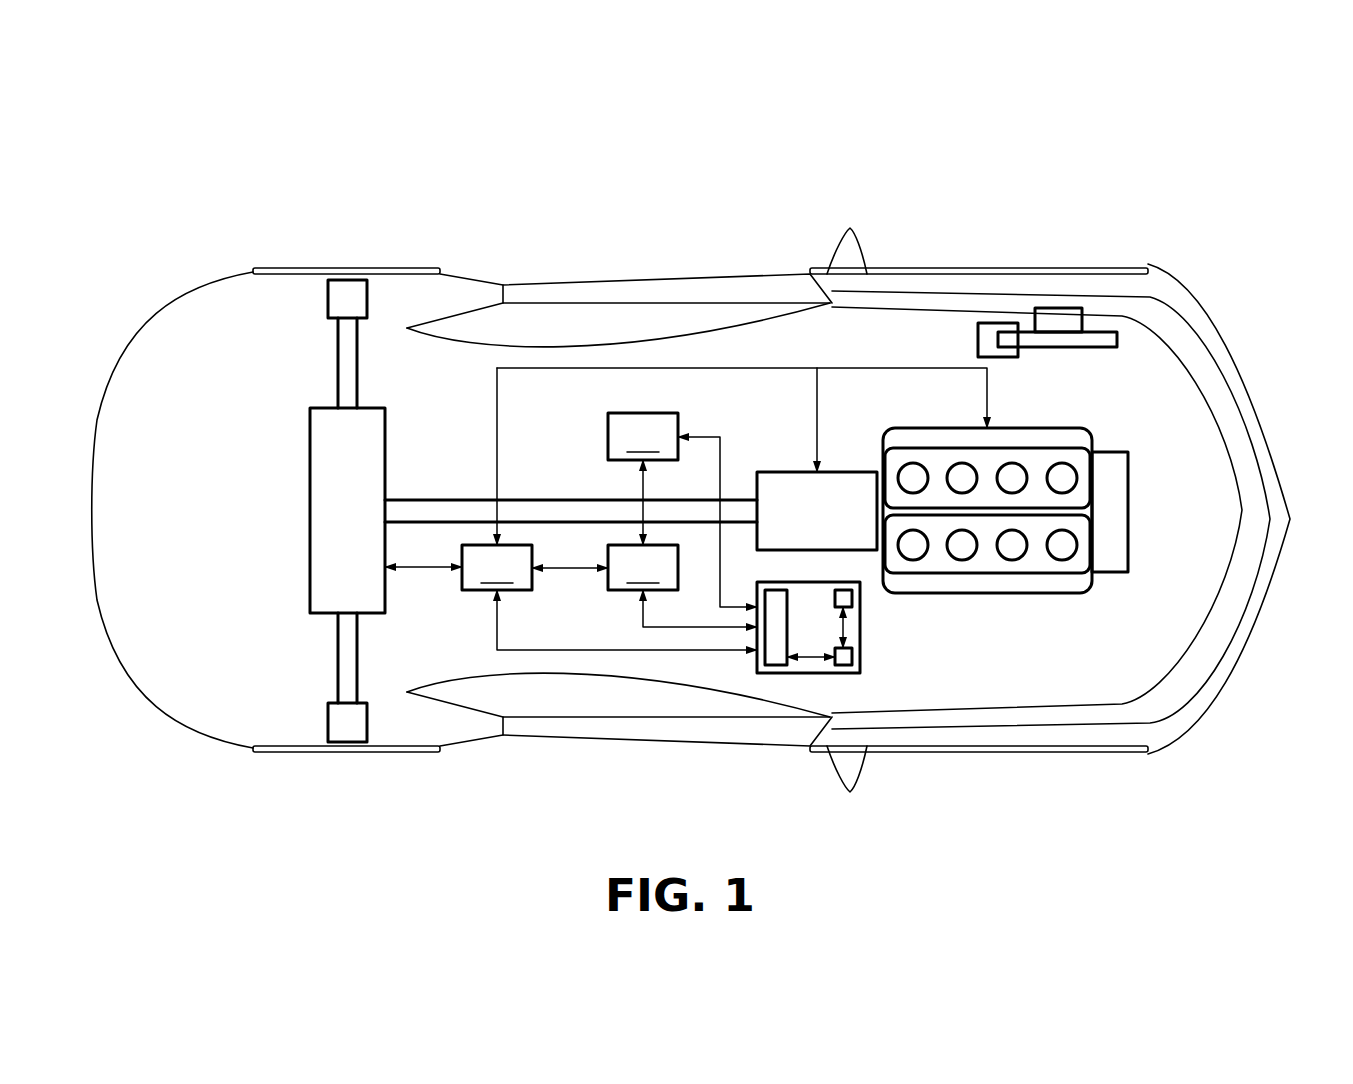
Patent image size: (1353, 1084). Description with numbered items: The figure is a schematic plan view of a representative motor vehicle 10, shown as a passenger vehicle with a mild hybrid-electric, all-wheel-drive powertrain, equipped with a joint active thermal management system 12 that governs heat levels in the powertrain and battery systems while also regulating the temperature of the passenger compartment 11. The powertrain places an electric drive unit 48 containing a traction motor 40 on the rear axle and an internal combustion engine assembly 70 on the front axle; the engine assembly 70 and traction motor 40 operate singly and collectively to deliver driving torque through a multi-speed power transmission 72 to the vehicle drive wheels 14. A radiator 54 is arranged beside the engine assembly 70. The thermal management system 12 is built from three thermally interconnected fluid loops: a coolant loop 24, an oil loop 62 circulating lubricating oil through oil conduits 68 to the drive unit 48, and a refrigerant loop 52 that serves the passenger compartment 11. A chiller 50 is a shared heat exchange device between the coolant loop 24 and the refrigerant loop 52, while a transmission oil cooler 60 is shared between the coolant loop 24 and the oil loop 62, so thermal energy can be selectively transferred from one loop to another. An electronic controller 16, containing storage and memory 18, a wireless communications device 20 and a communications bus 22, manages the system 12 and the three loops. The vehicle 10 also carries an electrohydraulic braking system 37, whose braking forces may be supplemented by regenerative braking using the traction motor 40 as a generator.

The motor vehicle 10 is at (1165, 143).
The passenger compartment 11 is at (702, 318).
The joint active thermal management system 12 is at (578, 405).
The vehicle drive wheels 14 is at (433, 268).
The electronic controller 16 is at (808, 675).
The storage and memory 18 is at (850, 675).
The wireless communications device 20 is at (853, 598).
The communications bus 22 is at (757, 662).
The coolant loop 24 is at (682, 586).
The electrohydraulic braking system 37 is at (1022, 298).
The traction motor 40 is at (325, 565).
The electric drive unit 48 is at (285, 485).
The chiller 50 is at (643, 490).
The refrigerant loop 52 is at (682, 510).
The radiator 54 is at (1118, 556).
The transmission oil cooler 60 is at (568, 568).
The oil loop 62 is at (497, 567).
The oil conduits 68 is at (497, 440).
The internal combustion engine assembly 70 is at (992, 590).
The multi-speed power transmission 72 is at (847, 472).